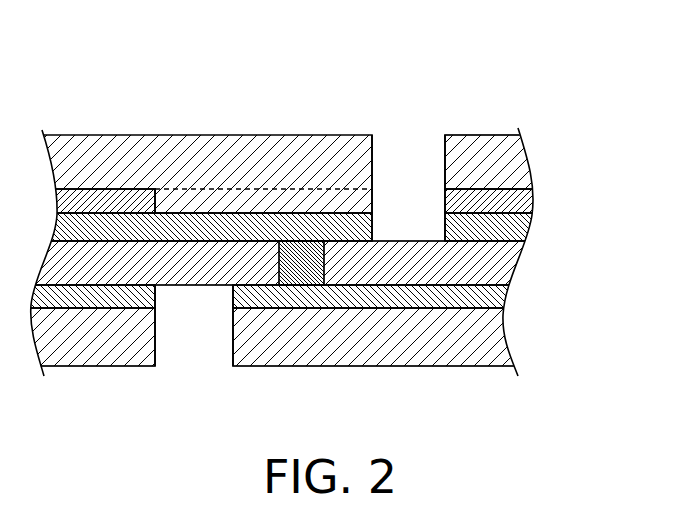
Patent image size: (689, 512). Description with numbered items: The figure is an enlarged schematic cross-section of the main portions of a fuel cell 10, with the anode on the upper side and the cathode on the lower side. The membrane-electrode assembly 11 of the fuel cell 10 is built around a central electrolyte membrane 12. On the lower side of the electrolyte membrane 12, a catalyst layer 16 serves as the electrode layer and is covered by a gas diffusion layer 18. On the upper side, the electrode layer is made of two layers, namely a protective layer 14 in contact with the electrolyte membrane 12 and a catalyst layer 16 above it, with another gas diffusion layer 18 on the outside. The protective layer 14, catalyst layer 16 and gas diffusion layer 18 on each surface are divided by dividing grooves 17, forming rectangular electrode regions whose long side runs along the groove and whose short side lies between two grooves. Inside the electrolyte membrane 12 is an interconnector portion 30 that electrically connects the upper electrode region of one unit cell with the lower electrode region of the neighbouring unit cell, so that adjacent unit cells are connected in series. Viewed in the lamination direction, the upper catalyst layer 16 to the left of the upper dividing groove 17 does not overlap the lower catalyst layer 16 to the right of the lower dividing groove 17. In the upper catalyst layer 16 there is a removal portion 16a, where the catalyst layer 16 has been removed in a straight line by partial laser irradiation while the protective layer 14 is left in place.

The fuel cell 10 is at (488, 84).
The membrane-electrode assembly 11 is at (618, 133).
The electrolyte membrane 12 is at (513, 267).
The protective layer 14 is at (238, 228).
The catalyst layer 16 is at (146, 198).
The removal portion 16a is at (283, 205).
The dividing groove 17 is at (402, 170).
The gas diffusion layer 18 is at (115, 177).
The interconnector portion 30 is at (295, 283).